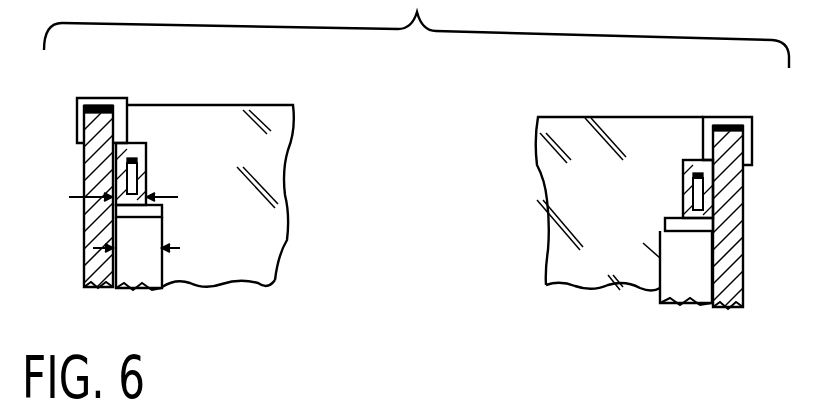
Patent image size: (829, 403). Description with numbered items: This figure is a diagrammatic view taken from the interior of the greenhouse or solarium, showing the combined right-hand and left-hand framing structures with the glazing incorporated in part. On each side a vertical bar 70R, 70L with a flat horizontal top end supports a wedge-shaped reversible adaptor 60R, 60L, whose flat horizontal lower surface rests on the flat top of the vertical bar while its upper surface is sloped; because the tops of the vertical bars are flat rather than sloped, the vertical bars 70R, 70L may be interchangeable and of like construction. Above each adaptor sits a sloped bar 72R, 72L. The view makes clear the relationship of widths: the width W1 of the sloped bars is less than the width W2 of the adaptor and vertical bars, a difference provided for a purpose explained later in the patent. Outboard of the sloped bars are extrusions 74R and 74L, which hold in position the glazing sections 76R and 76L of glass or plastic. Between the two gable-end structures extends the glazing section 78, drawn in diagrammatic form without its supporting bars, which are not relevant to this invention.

The glazing section 78 is at (563, 250).
The extrusion 74R is at (103, 96).
The glazing section 76R is at (83, 233).
The sloped bar 72R is at (182, 142).
The reversible adaptor 60R is at (162, 210).
The vertical bar 70R is at (142, 278).
The width of the sloped bars W1 is at (105, 181).
The width of the adaptor and vertical bars W2 is at (136, 246).
The extrusion 74L is at (722, 117).
The glazing section 76L is at (745, 263).
The sloped bar 72L is at (682, 185).
The reversible adaptor 60L is at (665, 223).
The vertical bar 70L is at (687, 290).